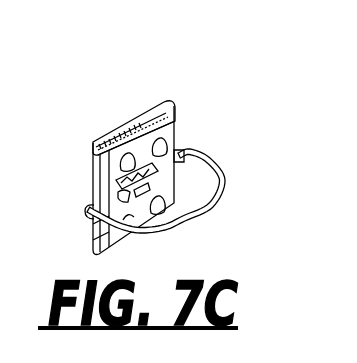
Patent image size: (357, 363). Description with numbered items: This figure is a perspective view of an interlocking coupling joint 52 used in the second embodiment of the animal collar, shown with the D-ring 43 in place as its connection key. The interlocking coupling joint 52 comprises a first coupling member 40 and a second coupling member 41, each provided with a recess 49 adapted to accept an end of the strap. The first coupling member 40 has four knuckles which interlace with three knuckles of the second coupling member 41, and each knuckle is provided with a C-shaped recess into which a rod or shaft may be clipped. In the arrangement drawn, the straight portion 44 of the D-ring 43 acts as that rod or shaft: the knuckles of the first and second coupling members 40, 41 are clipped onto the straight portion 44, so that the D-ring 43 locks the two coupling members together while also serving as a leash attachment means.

The first coupling member 40 is at (95, 158).
The recess 49 is at (139, 106).
The second coupling member 41 is at (92, 236).
The D-ring 43 is at (215, 160).
The straight portion 44 is at (86, 206).
The interlocking coupling joint 52 is at (199, 126).